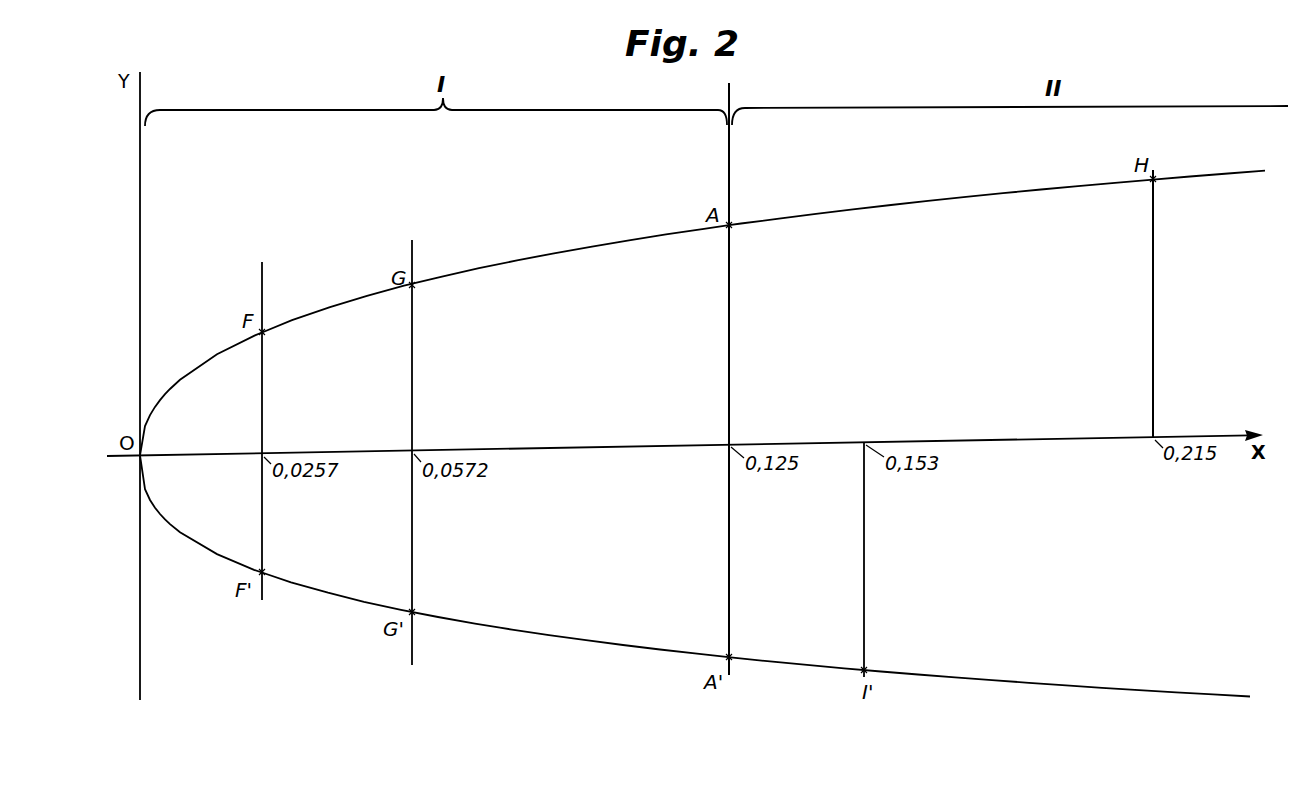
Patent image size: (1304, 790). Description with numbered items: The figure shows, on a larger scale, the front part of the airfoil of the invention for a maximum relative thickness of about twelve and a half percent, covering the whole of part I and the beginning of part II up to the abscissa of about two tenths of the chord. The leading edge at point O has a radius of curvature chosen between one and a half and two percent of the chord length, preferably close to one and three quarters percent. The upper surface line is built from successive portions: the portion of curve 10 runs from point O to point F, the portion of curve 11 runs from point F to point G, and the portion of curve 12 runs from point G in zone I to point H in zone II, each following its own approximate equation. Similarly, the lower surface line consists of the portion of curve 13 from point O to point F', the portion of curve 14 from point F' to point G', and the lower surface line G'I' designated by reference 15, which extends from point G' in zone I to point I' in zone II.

The portion of curve 10 is at (205, 358).
The portion of curve 11 is at (330, 305).
The portion of curve 12 is at (892, 205).
The portion of curve 13 is at (203, 548).
The portion of curve 14 is at (345, 600).
The lower surface line G'I' 15 is at (600, 642).